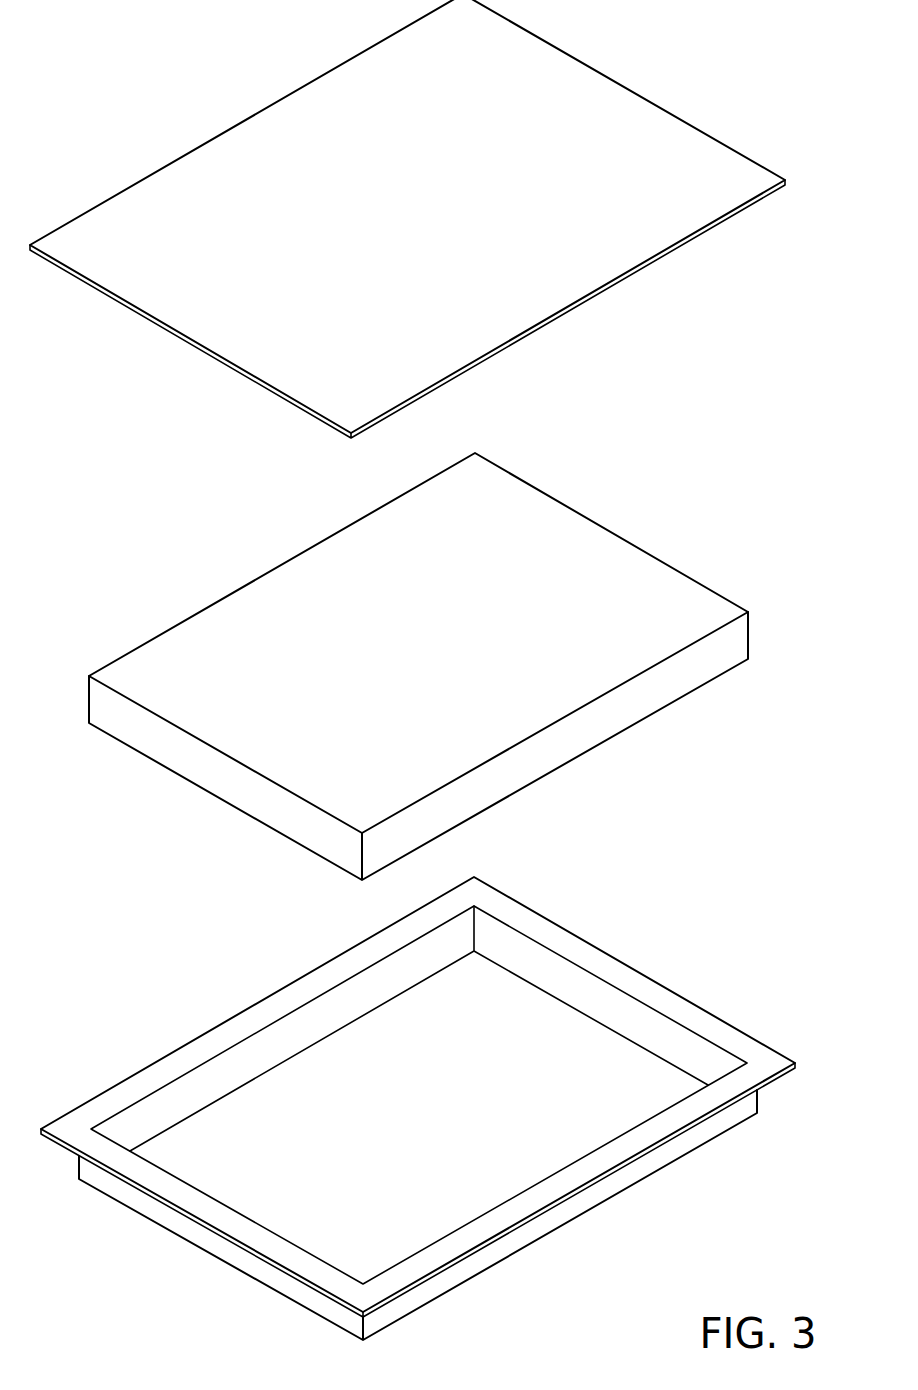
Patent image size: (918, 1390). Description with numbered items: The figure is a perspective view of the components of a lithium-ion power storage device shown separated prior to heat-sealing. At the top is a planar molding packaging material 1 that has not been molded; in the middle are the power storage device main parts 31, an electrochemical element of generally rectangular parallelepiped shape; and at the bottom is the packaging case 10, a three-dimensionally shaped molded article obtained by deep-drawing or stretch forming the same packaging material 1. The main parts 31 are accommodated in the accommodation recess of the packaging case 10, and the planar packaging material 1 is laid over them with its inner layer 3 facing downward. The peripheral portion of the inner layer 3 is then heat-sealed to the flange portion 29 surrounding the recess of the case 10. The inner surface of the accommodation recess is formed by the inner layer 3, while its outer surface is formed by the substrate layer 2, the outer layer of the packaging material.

The molding packaging material 1 is at (605, 107).
The power storage device main parts 31 is at (585, 545).
The packaging case 10 is at (418, 1094).
The flange portion 29 is at (633, 982).
The inner layer 3 is at (530, 1040).
The substrate layer 2 is at (548, 1220).